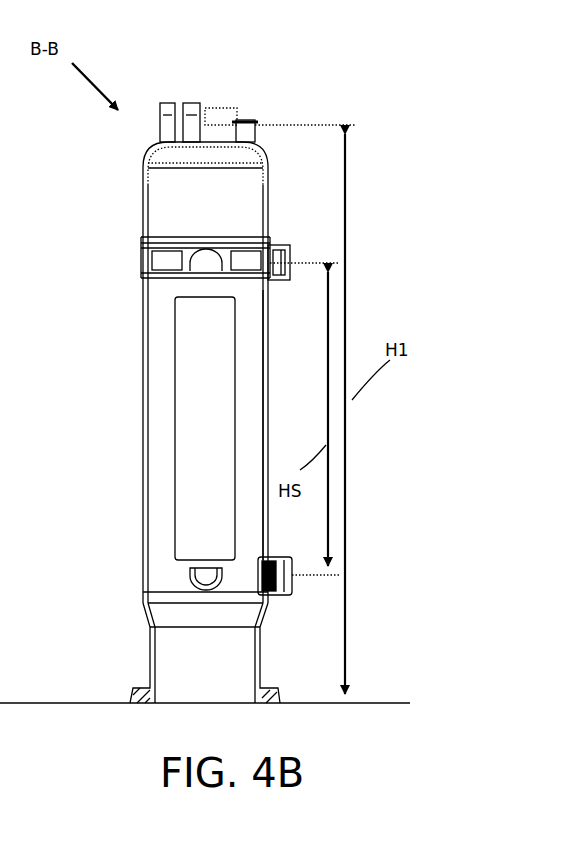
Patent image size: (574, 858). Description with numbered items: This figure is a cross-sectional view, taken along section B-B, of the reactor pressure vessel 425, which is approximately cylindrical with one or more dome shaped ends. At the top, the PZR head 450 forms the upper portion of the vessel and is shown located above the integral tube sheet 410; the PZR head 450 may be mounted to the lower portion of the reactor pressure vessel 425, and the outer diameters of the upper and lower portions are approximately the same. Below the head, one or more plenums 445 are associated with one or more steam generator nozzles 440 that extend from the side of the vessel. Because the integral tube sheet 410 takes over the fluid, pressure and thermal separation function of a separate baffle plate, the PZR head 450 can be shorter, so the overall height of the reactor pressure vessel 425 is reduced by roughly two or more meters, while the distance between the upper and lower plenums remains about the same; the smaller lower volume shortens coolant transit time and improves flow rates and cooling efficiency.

The integral tube sheet 410 is at (175, 278).
The reactor pressure vessel 425 is at (267, 347).
The steam generator nozzle 440 is at (278, 242).
The plenum 445 is at (245, 247).
The PZR head 450 is at (143, 205).